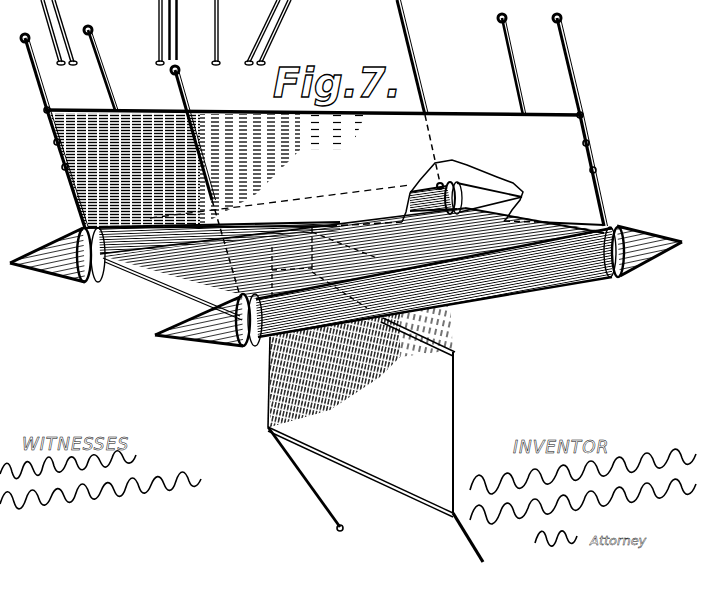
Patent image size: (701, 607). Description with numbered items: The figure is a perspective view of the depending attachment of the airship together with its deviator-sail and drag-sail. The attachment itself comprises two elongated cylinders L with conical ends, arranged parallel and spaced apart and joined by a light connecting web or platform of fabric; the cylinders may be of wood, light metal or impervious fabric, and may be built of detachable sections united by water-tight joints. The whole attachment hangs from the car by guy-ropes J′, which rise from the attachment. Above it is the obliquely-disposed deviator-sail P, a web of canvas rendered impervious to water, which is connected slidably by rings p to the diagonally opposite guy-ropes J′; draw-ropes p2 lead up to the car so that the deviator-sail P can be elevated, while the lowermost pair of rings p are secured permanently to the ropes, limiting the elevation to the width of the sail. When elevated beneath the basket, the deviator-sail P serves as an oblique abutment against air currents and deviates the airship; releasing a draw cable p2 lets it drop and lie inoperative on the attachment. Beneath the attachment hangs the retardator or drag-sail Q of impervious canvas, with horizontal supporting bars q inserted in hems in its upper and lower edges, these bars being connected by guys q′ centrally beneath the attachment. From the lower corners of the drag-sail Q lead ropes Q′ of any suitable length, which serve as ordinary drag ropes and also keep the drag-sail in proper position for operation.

The guy-ropes J′ is at (40, 80).
The draw-ropes p2 is at (110, 90).
The rings p is at (45, 111).
The deviator-sail P is at (324, 169).
The elongated cylinders L is at (441, 190).
The drag-sail Q is at (457, 390).
The horizontal supporting bars q is at (378, 478).
The guys q′ is at (294, 470).
The ropes Q′ is at (482, 556).